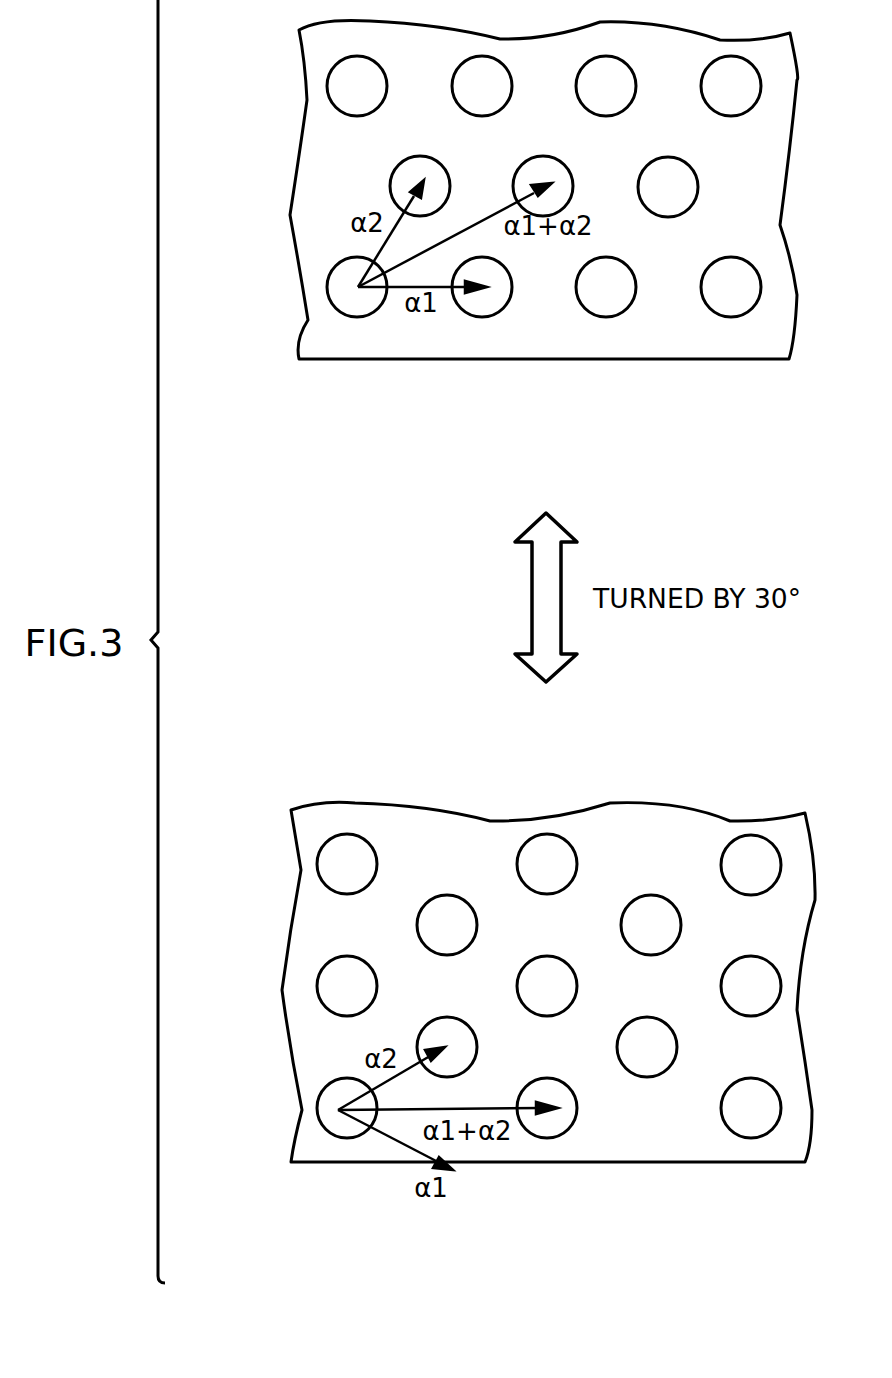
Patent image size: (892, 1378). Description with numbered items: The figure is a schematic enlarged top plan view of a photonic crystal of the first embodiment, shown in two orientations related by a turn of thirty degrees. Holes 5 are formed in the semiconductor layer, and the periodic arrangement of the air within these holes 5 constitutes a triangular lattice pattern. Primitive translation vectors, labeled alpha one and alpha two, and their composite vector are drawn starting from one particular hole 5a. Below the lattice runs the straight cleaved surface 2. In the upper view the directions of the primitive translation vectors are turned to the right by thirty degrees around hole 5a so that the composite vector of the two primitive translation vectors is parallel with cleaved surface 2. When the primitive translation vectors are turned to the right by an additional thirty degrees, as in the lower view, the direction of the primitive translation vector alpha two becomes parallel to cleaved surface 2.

The cleaved surface 2 is at (540, 361).
The holes 5 is at (607, 297).
The hole 5a is at (355, 307).